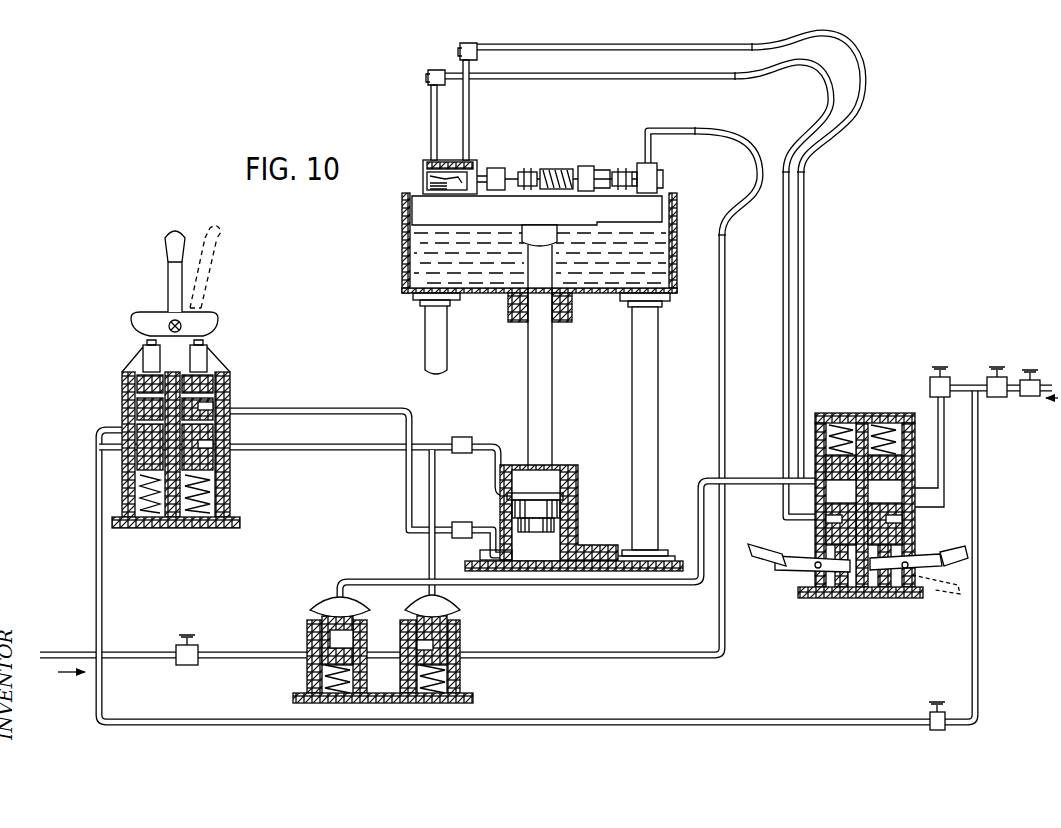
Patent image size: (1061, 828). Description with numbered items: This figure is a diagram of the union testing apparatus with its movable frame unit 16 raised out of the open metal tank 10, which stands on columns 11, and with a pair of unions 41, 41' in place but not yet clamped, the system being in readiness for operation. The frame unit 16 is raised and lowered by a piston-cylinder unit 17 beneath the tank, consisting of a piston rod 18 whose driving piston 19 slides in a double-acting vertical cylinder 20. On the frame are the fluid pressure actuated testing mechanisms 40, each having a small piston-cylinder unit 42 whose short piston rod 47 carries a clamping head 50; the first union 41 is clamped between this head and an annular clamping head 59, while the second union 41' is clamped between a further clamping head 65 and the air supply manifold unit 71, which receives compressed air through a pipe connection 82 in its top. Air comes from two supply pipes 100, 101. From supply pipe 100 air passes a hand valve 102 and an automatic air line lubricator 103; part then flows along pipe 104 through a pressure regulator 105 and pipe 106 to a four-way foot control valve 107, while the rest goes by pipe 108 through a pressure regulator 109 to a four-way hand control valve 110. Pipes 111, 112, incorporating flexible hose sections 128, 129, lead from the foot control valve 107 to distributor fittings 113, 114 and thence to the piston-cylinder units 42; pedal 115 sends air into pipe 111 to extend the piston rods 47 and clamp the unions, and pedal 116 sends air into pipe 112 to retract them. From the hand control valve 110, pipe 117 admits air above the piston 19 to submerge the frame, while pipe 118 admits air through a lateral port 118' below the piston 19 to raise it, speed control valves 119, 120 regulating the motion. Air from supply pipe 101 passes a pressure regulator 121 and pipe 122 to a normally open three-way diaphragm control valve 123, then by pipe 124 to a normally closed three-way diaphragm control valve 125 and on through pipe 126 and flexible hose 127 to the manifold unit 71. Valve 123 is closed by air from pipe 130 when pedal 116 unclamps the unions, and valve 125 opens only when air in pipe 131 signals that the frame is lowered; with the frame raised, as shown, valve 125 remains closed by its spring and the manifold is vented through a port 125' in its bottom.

The tank 10 is at (398, 266).
The columns 11 is at (652, 426).
The movable frame unit 16 is at (522, 219).
The piston-cylinder unit 17 is at (580, 500).
The piston rod 18 is at (554, 388).
The driving piston 19 is at (538, 520).
The vertical cylinder 20 is at (570, 470).
The fluid pressure actuated testing mechanism 40 is at (586, 165).
The union 41 is at (524, 166).
The union 41' is at (620, 162).
The piston-cylinder unit 42 is at (447, 156).
The piston rod 47 is at (494, 168).
The clamping head 50 is at (497, 168).
The annular clamping head 59 is at (552, 166).
The clamping head 65 is at (602, 168).
The manifold unit 71 is at (655, 176).
The pipe connection 82 is at (690, 118).
The compressed air supply pipe 100 is at (1040, 380).
The compressed air supply pipe 101 is at (72, 636).
The hand valve 102 is at (1030, 398).
The automatic air line lubricator 103 is at (998, 376).
The pipe 104 is at (962, 385).
The pressure regulator 105 is at (930, 387).
The pipe 106 is at (937, 420).
The four-way foot control valve 107 is at (836, 412).
The pipe 108 is at (980, 532).
The pressure regulator 109 is at (937, 730).
The four-way hand control valve 110 is at (233, 386).
The pipe 111 is at (552, 79).
The pipe 112 is at (616, 40).
The fluid pressure distributor fitting 113 is at (428, 78).
The fluid pressure distributor fitting 114 is at (460, 48).
The pedal 115 is at (773, 551).
The pedal 116 is at (946, 552).
The pipe 117 is at (283, 451).
The pipe 118 is at (371, 464).
The lateral port 118' is at (578, 547).
The speed control valve 119 is at (462, 437).
The speed control valve 120 is at (458, 538).
The pressure regulator 121 is at (186, 666).
The pipe 122 is at (240, 652).
The normally open three-way diaphragm control valve 123 is at (304, 668).
The pipe 124 is at (382, 650).
The normally closed three-way diaphragm control valve 125 is at (460, 644).
The port 125' is at (463, 711).
The pipe 126 is at (719, 342).
The flexible hose 127 is at (728, 222).
The flexible hose section 128 is at (822, 98).
The flexible hose section 129 is at (866, 62).
The pipe 130 is at (572, 584).
The pipe 131 is at (428, 566).